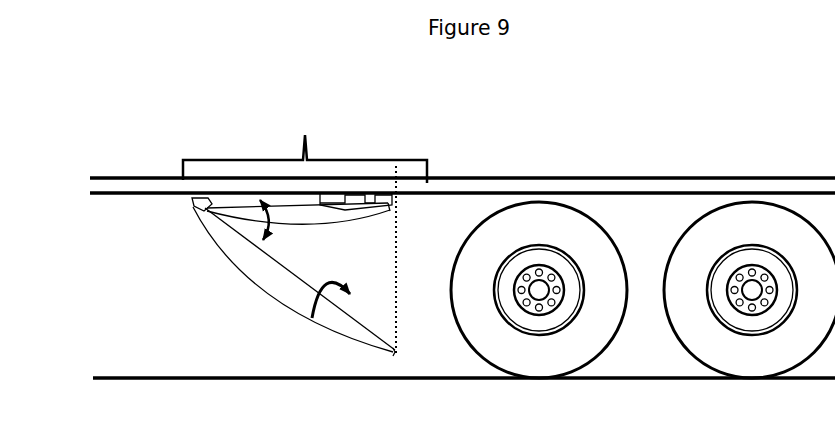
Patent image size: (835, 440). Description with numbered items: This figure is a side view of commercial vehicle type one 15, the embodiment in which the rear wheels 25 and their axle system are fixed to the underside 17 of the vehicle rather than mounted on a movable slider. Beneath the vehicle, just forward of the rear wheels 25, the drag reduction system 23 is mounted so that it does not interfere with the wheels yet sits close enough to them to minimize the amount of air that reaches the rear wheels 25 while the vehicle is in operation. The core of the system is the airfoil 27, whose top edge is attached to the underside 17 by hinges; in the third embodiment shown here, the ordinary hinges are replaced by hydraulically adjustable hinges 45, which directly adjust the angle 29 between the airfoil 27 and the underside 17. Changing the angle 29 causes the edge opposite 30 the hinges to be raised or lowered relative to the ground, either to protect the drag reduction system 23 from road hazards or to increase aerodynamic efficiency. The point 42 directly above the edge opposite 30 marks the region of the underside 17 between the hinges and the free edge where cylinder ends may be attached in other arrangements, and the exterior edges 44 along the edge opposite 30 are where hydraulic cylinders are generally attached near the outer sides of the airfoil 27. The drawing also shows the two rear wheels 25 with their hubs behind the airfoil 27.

The commercial vehicle type one 15 is at (633, 175).
The underside of the commercial vehicle 17 is at (113, 197).
The drag reduction system 23 is at (305, 147).
The rear wheels 25 is at (714, 351).
The airfoil 27 is at (316, 298).
The angle of the airfoil 29 is at (298, 225).
The edge opposite the plurality of hinges 30 is at (391, 358).
The point directly above the edge opposite the hinges 42 is at (394, 246).
The exterior edges 44 is at (314, 316).
The hydraulically adjustable hinges 45 is at (201, 204).